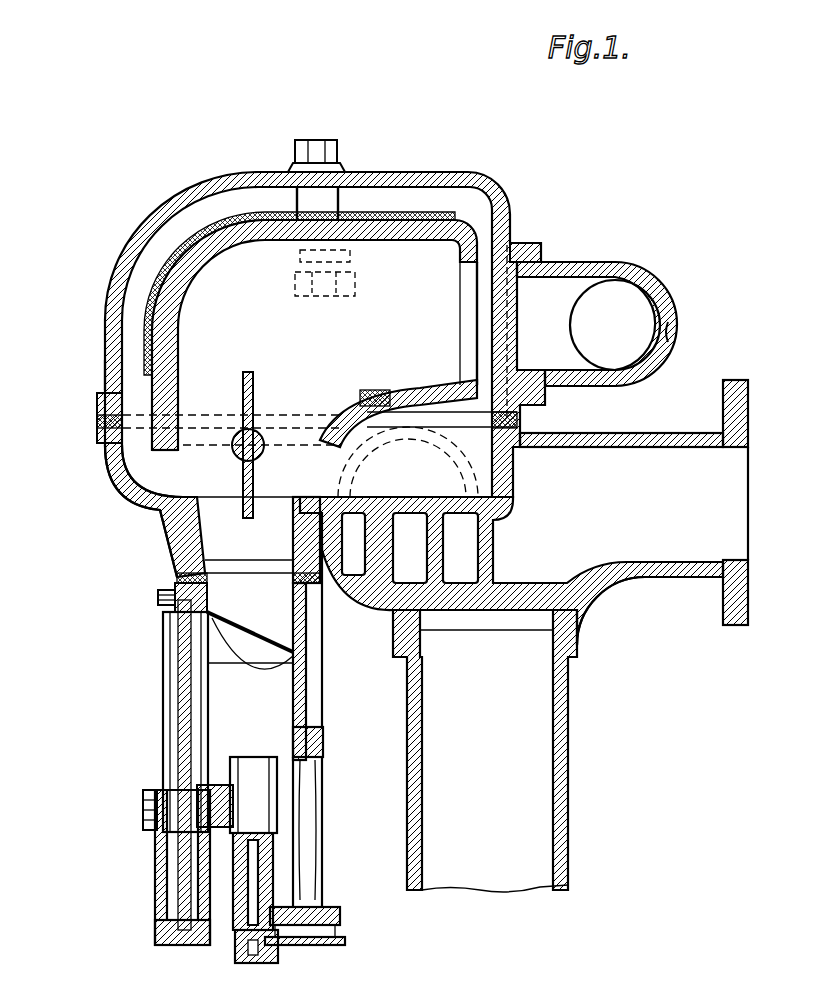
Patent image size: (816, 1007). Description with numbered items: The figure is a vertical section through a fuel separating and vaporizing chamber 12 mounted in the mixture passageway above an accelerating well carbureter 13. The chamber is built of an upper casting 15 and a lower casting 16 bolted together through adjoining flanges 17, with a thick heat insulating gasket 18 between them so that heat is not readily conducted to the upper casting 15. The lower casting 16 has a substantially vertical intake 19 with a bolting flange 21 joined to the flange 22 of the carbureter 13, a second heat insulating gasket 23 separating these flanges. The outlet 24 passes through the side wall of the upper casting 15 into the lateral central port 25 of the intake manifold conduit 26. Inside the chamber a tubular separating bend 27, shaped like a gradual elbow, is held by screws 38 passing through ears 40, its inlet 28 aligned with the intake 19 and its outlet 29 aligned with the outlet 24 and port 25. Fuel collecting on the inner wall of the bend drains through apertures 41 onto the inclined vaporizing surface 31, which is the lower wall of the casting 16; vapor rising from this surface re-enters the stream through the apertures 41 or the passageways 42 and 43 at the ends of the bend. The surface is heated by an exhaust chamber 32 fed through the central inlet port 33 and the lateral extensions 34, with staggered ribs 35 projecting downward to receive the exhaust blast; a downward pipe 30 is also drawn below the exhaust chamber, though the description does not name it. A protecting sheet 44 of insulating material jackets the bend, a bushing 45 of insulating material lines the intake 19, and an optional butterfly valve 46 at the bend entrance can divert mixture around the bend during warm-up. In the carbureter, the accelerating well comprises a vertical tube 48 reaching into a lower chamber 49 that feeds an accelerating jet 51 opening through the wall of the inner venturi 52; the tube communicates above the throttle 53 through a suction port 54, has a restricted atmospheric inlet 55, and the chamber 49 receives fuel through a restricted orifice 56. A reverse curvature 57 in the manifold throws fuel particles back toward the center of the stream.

The fuel separating and vaporizing chamber 12 is at (140, 310).
The carbureter 13 is at (160, 695).
The upper casting 15 is at (105, 372).
The lower casting 16 is at (115, 472).
The adjoining flanges 17 is at (97, 405).
The heat insulating gasket 18 is at (97, 428).
The intake 19 is at (205, 525).
The bolting flange 21 is at (205, 565).
The carbureter flange 22 is at (312, 612).
The heat insulating gasket 23 is at (177, 580).
The outlet 24 is at (525, 260).
The lateral central port 25 is at (560, 270).
The intake manifold conduit 26 is at (628, 290).
The separating bend 27 is at (215, 300).
The bend inlet 28 is at (200, 445).
The bend outlet 29 is at (460, 300).
The outlet pipe 30 is at (430, 706).
The inclined vaporizing surface 31 is at (414, 497).
The exhaust chamber 32 is at (598, 590).
The central inlet port 33 is at (630, 486).
The lateral extensions 34 is at (492, 517).
The staggered ribs 35 is at (450, 578).
The screws 38 is at (337, 150).
The ears 40 is at (332, 286).
The apertures 41 is at (356, 400).
The passageway 42 is at (318, 478).
The passageway 43 is at (483, 375).
The protecting sheet 44 is at (238, 236).
The bushing 45 is at (175, 512).
The butterfly valve 46 is at (254, 470).
The vertical tube 48 is at (170, 722).
The lower chamber 49 is at (155, 876).
The accelerating jet 51 is at (250, 770).
The inner venturi 52 is at (290, 804).
The throttle 53 is at (268, 652).
The suction port 54 is at (207, 597).
The restricted atmospheric inlet 55 is at (158, 600).
The restricted orifice 56 is at (190, 945).
The reverse curvature 57 is at (672, 325).